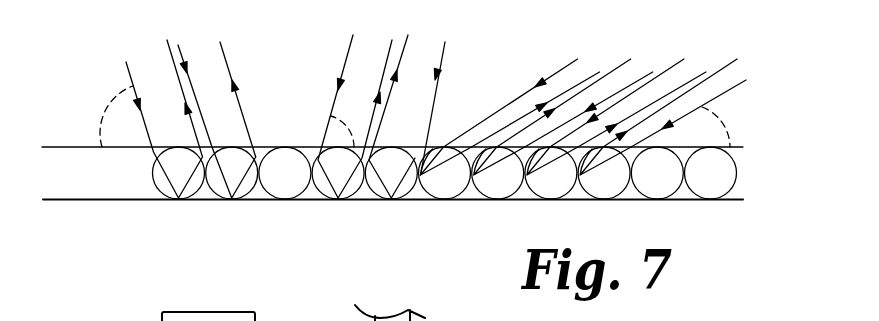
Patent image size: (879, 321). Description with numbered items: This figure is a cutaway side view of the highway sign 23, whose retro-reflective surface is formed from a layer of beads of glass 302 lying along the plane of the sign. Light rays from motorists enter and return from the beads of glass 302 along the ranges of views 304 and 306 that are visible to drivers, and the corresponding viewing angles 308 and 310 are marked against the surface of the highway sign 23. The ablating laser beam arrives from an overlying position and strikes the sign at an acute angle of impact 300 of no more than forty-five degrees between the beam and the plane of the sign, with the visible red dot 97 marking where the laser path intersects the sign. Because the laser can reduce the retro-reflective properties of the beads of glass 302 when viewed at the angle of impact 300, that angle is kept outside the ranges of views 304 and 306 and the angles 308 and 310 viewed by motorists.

The highway sign 23 is at (741, 147).
The visible red dot 97 is at (753, 74).
The angle of impact 300 is at (725, 120).
The beads of glass 302 is at (736, 177).
The range of view 304 is at (224, 50).
The range of view 306 is at (445, 54).
The angle viewed by motorists 308 is at (110, 102).
The angle viewed by motorists 310 is at (335, 115).